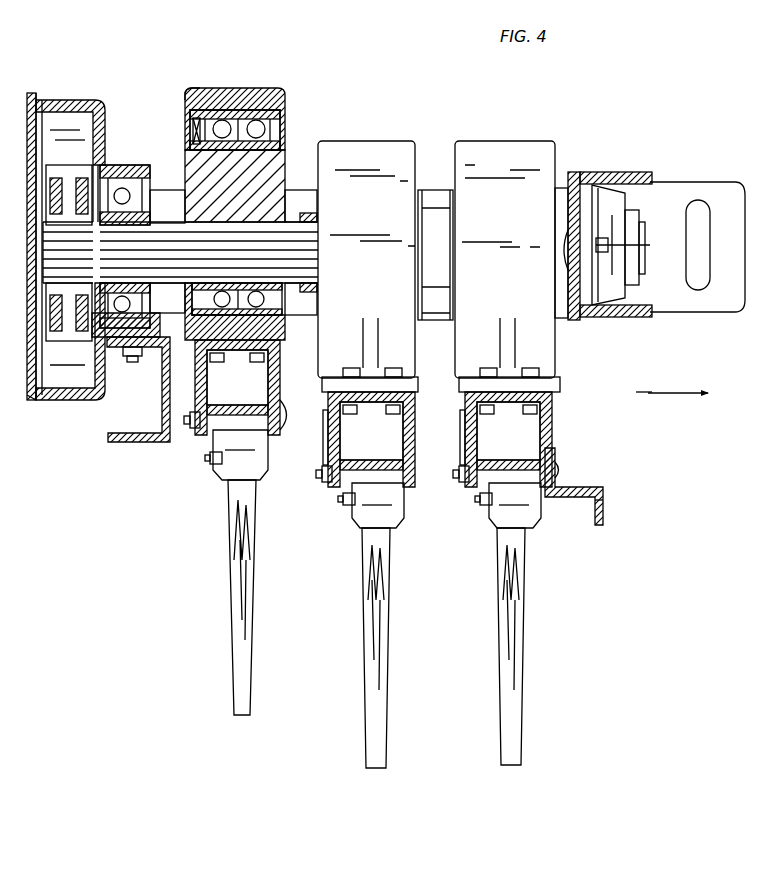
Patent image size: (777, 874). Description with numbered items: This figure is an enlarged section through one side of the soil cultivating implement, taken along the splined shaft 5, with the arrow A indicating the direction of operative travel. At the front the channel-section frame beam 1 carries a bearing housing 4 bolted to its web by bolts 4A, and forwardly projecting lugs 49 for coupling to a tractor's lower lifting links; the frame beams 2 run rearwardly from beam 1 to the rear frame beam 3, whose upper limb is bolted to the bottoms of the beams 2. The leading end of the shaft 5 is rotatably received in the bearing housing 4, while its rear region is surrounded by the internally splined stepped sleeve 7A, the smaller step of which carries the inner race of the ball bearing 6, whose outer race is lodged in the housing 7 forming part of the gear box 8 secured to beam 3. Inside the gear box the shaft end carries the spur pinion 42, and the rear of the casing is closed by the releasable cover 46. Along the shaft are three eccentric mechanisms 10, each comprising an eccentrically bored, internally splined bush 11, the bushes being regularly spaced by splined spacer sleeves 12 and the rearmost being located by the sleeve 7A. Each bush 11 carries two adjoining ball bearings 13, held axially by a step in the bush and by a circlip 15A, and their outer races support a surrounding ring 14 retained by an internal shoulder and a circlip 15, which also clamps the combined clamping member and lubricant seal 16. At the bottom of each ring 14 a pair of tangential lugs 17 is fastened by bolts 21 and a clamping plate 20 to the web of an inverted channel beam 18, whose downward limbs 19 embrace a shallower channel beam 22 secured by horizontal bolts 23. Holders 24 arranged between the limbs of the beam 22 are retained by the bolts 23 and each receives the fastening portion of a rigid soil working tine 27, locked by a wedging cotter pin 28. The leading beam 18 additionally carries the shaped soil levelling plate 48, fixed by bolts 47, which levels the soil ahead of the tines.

The frame beam 1 is at (642, 174).
The frame beam 2 is at (572, 175).
The frame beam 3 is at (126, 444).
The bearing housing 4 is at (626, 198).
The bolt 4A is at (660, 250).
The shaft 5 is at (318, 262).
The ball bearing 6 is at (121, 177).
The housing 7 is at (148, 166).
The stepped sleeve 7A is at (173, 190).
The gear box 8 is at (99, 98).
The eccentric mechanism 10 is at (305, 110).
The eccentrically bored disc or bush 11 is at (283, 152).
The spacer sleeve 12 is at (318, 222).
The ball bearing 13 is at (245, 110).
The ring 14 is at (282, 90).
The circlip 15 is at (195, 87).
The circlip 15A is at (235, 186).
The combined clamping member and lubricant seal 16 is at (190, 128).
The lug 17 is at (323, 385).
The beam 18 is at (330, 415).
The limb 19 is at (282, 366).
The clamping plate 20 is at (373, 405).
The bolt 21 is at (392, 368).
The beam 22 is at (264, 416).
The bolt 23 is at (192, 440).
The holder 24 is at (214, 492).
The soil working tine 27 is at (228, 594).
The cotter pin 28 is at (207, 462).
The pinion 42 is at (80, 366).
The cover 46 is at (33, 402).
The bolt 47 is at (560, 470).
The shaped plate 48 is at (604, 510).
The lug 49 is at (700, 182).
The direction of operative travel A is at (672, 404).